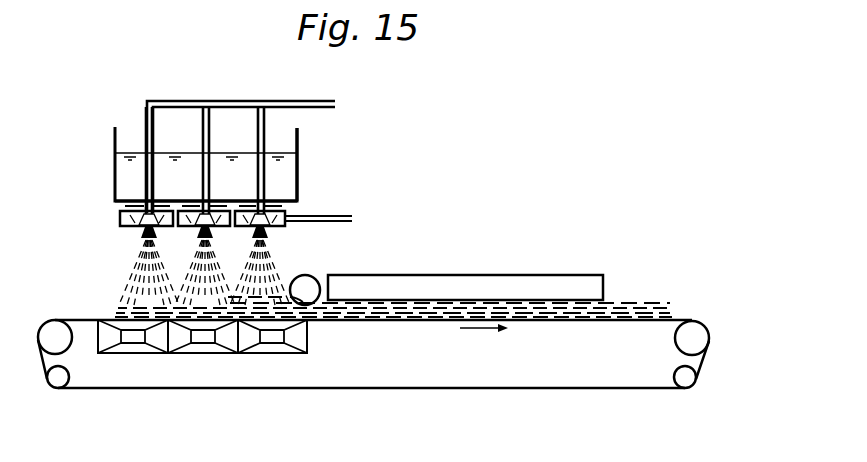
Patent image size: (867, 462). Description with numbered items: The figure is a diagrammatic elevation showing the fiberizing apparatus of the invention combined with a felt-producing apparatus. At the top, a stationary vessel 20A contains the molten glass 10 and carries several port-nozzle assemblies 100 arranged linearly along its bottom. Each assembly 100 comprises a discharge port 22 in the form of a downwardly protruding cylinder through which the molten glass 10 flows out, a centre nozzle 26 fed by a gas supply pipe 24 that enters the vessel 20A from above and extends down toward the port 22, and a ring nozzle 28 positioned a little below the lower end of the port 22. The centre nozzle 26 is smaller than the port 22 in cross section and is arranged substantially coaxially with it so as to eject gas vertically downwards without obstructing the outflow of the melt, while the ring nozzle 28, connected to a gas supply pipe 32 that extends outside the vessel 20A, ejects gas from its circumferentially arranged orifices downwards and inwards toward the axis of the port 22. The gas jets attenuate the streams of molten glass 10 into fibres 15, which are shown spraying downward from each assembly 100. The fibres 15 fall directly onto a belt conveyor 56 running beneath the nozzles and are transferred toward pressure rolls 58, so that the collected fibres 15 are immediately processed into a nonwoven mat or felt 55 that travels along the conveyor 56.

The molten glass 10 is at (133, 150).
The fibres 15 is at (130, 269).
The vessel 20A is at (297, 178).
The discharge port 22 is at (160, 205).
The gas supply pipe 24 is at (147, 103).
The centre nozzle 26 is at (127, 203).
The ring nozzle 28 is at (133, 228).
The gas supply pipe 32 is at (338, 216).
The felt 55 is at (643, 306).
The belt conveyor 56 is at (78, 317).
The pressure rolls 58 is at (305, 278).
The port-nozzle assembly 100 is at (227, 181).